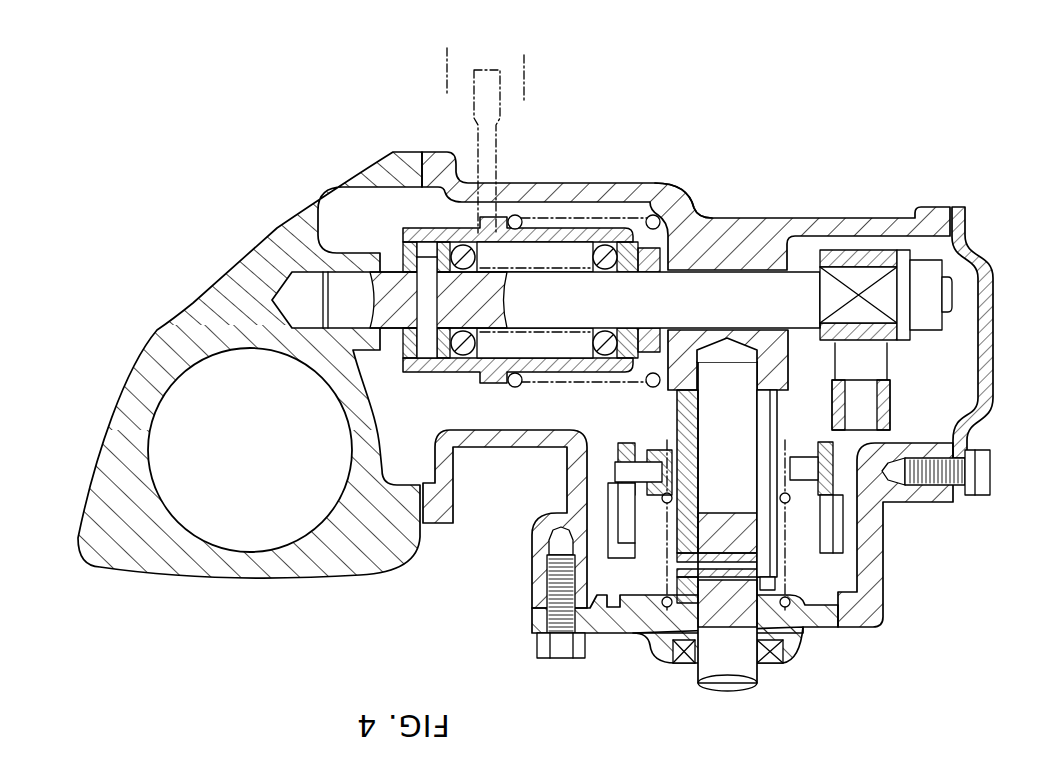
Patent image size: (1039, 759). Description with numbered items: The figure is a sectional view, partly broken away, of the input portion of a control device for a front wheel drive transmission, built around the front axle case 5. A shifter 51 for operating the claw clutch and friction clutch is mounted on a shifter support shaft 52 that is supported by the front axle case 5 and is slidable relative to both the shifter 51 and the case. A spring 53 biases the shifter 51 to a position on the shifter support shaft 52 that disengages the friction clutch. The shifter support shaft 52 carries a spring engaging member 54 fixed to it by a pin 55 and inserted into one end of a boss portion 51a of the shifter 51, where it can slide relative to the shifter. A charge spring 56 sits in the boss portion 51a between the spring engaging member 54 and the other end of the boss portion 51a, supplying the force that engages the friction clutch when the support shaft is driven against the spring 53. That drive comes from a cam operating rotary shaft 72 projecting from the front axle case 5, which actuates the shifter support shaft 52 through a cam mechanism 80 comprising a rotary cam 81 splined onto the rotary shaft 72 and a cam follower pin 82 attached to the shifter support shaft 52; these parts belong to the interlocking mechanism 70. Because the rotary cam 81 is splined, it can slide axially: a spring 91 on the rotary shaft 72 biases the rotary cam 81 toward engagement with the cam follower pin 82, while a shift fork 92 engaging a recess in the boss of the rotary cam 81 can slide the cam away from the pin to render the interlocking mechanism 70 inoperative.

The front axle case 5 is at (384, 568).
The spring engaging member 54 is at (380, 380).
The pin 55 is at (405, 258).
The charge spring 56 is at (605, 346).
The shifter 51 is at (500, 166).
The boss portion 51a is at (590, 232).
The shifter support shaft 52 is at (738, 270).
The spring 53 is at (655, 190).
The interlocking mechanism 70 is at (653, 590).
The cam operating rotary shaft 72 is at (708, 665).
The cam mechanism 80 is at (918, 401).
The rotary cam 81 is at (806, 395).
The cam follower pin 82 is at (890, 383).
The spring 91 is at (812, 608).
The shift fork 92 is at (640, 468).